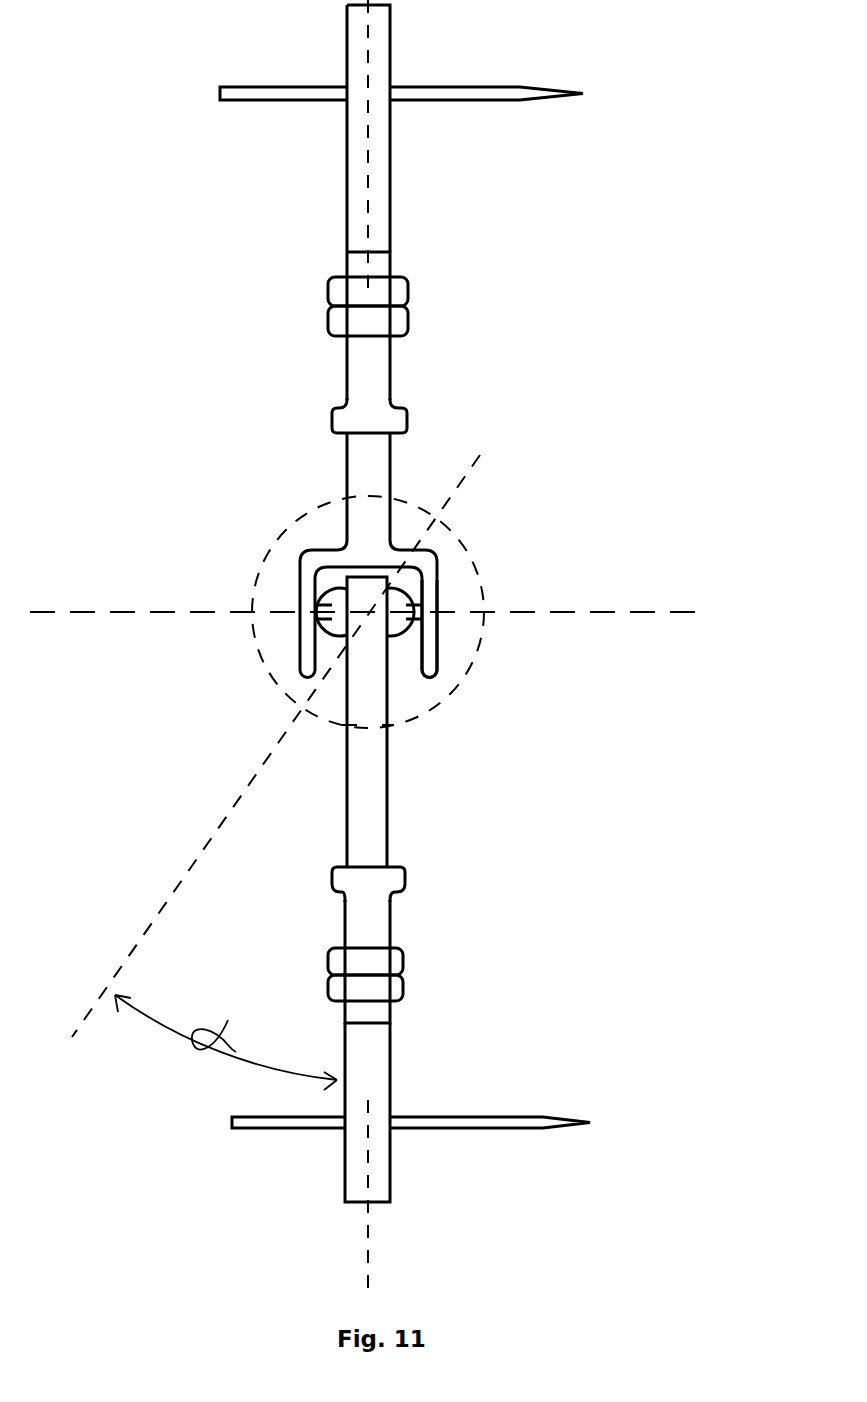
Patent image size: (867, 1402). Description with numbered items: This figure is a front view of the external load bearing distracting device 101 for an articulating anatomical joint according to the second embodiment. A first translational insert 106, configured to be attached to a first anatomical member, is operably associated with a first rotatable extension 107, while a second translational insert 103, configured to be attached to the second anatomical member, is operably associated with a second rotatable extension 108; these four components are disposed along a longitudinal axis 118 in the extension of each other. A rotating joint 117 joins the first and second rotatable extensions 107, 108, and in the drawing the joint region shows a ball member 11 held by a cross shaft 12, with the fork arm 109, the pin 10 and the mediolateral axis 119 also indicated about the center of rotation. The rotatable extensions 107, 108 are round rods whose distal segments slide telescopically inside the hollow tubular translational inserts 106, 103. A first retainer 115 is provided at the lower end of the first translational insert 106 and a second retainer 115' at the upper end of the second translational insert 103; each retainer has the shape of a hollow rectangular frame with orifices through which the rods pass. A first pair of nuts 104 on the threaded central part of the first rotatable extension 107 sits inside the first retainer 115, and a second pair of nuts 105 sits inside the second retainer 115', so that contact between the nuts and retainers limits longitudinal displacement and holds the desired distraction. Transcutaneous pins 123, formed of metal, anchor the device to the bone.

The external load bearing distracting device 101 is at (493, 233).
The longitudinal axis 118 is at (357, 53).
The first translational insert 106 is at (367, 203).
The first pair of nuts 104 is at (340, 292).
The first retainer 115 is at (303, 413).
The first rotatable extension 107 is at (358, 473).
The fork arm 109 is at (428, 590).
The pin 10 is at (360, 585).
The cross shaft 12 is at (333, 628).
The ball member 11 is at (387, 580).
The second rotatable extension 108 is at (388, 737).
The second retainer 115' is at (306, 897).
The second translational insert 103 is at (377, 925).
The second pair of nuts 105 is at (400, 988).
The transcutaneous pins 123 is at (520, 83).
The rotating joint 117 is at (447, 530).
The pivot axis 119 is at (373, 595).